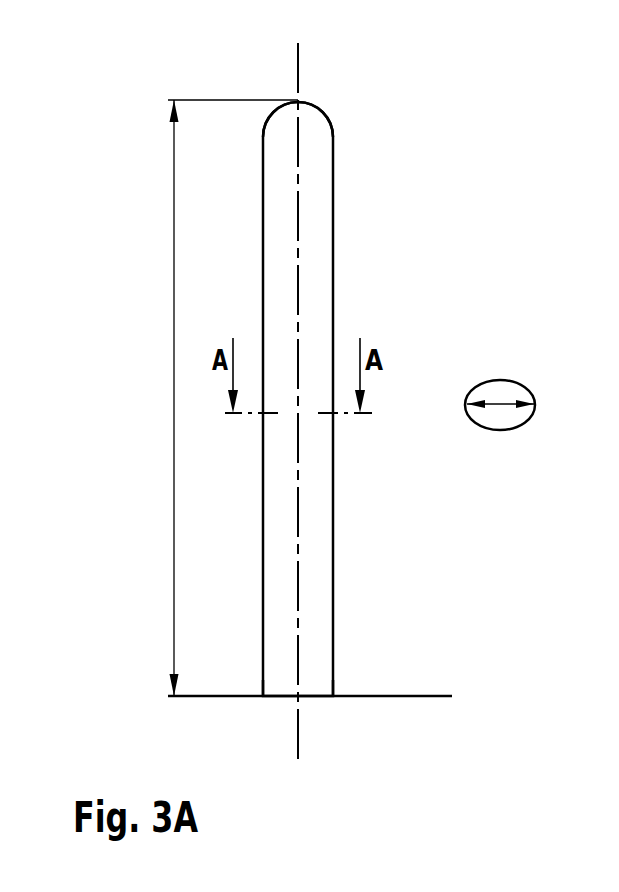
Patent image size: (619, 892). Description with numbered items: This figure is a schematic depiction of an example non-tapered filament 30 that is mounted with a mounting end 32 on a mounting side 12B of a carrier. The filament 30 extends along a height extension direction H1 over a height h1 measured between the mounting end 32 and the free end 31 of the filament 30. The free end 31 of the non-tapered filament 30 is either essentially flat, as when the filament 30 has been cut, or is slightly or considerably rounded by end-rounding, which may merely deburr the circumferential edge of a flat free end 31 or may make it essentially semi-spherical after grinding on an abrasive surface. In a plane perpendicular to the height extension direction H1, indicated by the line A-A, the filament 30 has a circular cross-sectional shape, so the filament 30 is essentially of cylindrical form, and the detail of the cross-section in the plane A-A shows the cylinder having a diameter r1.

The filament 30 is at (405, 223).
The free end 31 is at (327, 102).
The mounting end 32 is at (342, 687).
The mounting side 12B is at (426, 695).
The height extension direction H1 is at (297, 68).
The height h1 is at (218, 398).
The diameter r1 is at (507, 404).